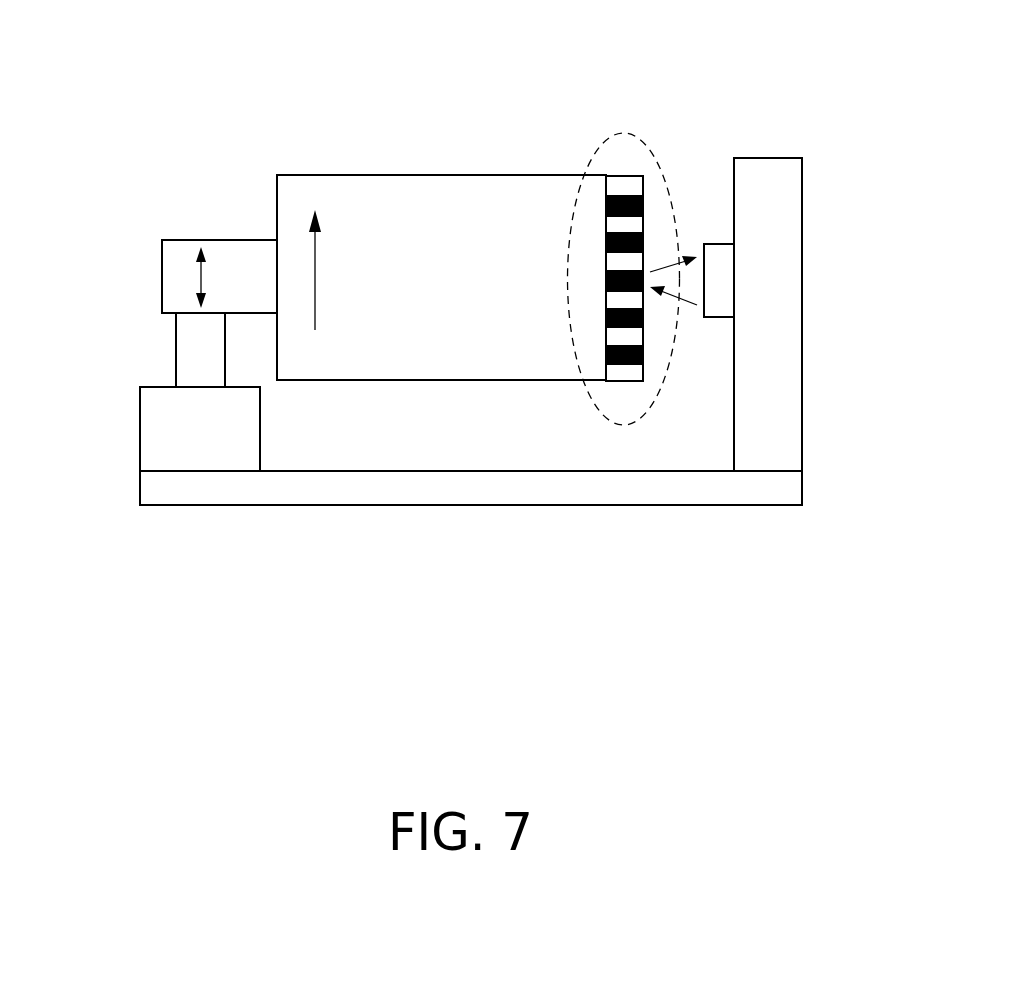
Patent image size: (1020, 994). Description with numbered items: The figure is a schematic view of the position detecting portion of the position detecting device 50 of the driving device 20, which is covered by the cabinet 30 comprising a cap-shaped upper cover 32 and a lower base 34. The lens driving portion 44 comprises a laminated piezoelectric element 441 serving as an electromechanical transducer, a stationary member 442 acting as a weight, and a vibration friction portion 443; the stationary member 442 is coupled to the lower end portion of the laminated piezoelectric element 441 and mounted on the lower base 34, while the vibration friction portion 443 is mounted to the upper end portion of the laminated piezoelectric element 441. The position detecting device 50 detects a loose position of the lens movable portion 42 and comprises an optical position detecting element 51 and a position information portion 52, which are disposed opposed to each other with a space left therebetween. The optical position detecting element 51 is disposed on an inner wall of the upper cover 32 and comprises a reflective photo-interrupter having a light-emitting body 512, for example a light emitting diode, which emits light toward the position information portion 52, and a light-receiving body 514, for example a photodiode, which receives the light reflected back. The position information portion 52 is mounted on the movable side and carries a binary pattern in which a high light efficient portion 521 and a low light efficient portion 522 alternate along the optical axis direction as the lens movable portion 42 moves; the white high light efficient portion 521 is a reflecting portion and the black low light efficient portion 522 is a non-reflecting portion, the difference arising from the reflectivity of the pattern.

The driving device 20 is at (207, 95).
The cabinet 30 is at (515, 312).
The upper cover 32 is at (797, 183).
The lower base 34 is at (492, 493).
The lens movable portion 42 is at (365, 160).
The lens driving portion 44 is at (167, 316).
The laminated piezoelectric element 441 is at (187, 343).
The stationary member 442 is at (147, 425).
The vibration friction portion 443 is at (165, 273).
The position detecting device 50 is at (770, 235).
The optical position detecting element 51 is at (725, 285).
The light-emitting body 512 is at (718, 320).
The light-receiving body 514 is at (720, 243).
The position information portion 52 is at (572, 302).
The high light efficient portion 521 is at (621, 180).
The low light efficient portion 522 is at (603, 202).